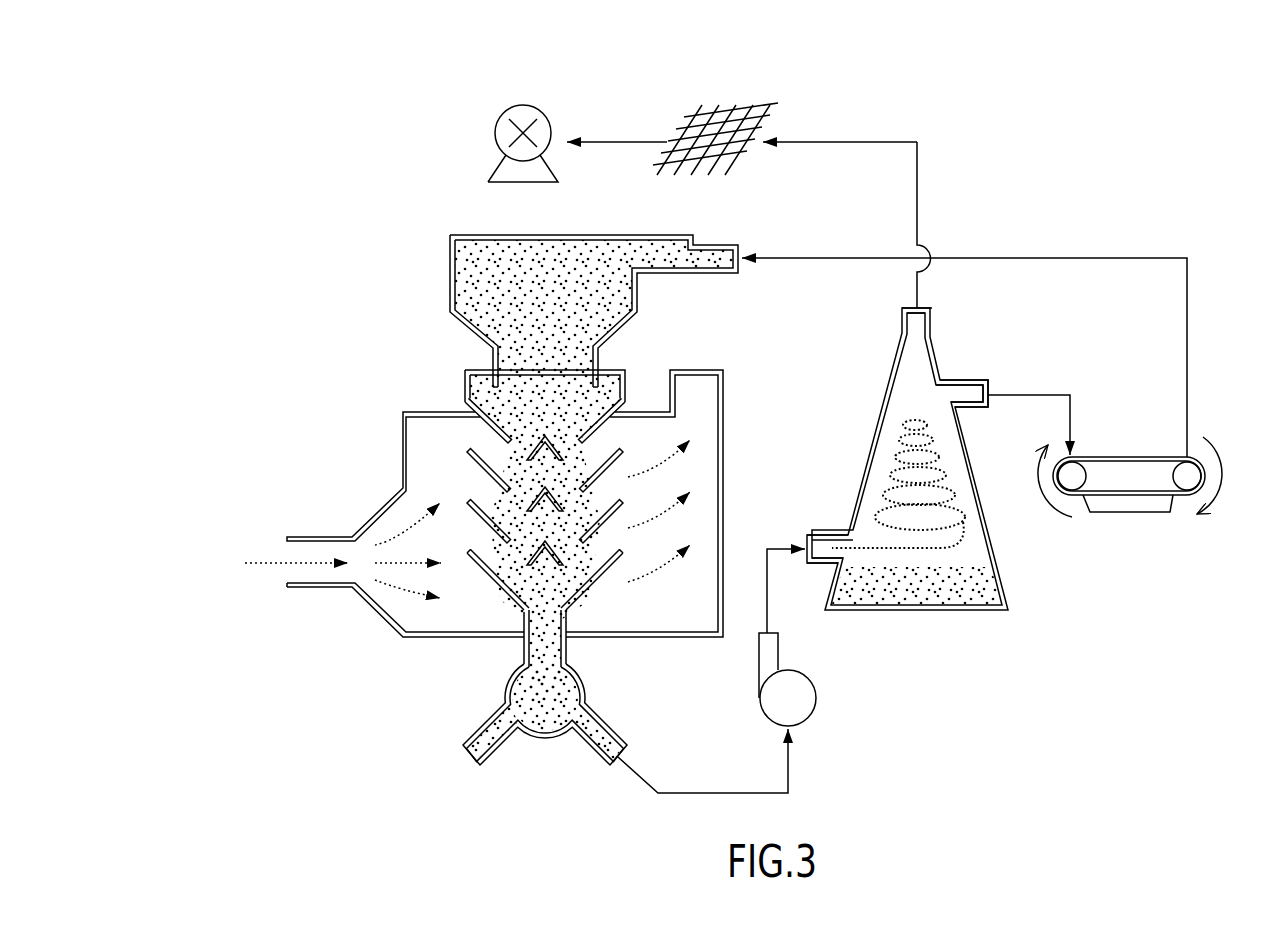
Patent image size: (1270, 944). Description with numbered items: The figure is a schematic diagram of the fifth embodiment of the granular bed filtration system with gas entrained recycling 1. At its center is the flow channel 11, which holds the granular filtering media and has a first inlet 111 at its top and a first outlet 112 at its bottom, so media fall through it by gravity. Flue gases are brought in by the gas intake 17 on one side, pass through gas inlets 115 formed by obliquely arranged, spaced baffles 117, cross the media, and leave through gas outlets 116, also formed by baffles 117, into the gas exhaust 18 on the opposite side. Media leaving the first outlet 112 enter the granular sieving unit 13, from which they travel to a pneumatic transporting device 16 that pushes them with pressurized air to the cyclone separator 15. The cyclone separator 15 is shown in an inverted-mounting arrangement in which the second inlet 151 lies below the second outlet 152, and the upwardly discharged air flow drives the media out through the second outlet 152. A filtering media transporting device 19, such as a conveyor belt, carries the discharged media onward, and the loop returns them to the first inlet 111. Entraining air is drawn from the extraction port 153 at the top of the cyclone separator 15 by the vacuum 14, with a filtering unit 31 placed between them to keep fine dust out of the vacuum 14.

The granular bed filtration system with gas entrained recycling 1 is at (1136, 112).
The flow channel 11 is at (411, 341).
The first inlet 111 is at (543, 375).
The first outlet 112 is at (543, 644).
The granular sieving unit 13 is at (594, 680).
The vacuum 14 is at (488, 153).
The cyclone separator 15 is at (858, 418).
The second inlet 151 is at (820, 553).
The second outlet 152 is at (966, 390).
The extraction port 153 is at (915, 325).
The pneumatic transporting device 16 is at (822, 689).
The gas intake 17 is at (396, 446).
The gas exhaust 18 is at (735, 488).
The filtering media transporting device 19 is at (1130, 445).
The filtering unit 31 is at (743, 157).
The gas inlet 115 is at (492, 489).
The gas outlet 116 is at (596, 488).
The baffles 117 is at (490, 432).